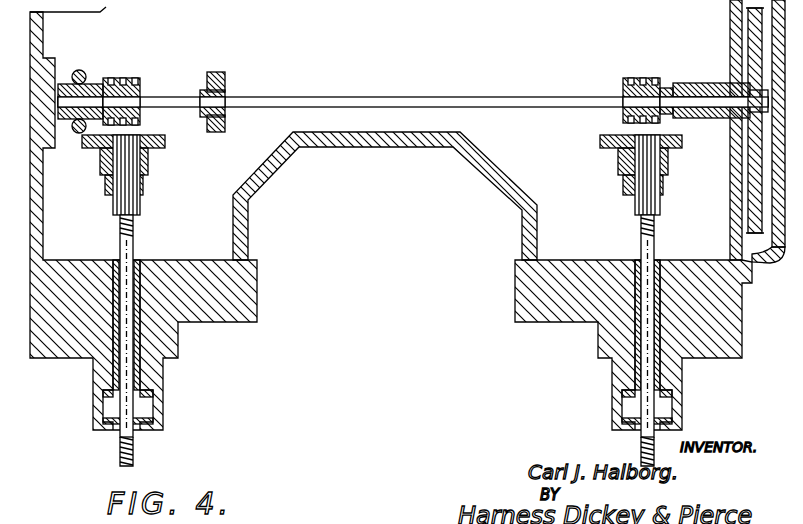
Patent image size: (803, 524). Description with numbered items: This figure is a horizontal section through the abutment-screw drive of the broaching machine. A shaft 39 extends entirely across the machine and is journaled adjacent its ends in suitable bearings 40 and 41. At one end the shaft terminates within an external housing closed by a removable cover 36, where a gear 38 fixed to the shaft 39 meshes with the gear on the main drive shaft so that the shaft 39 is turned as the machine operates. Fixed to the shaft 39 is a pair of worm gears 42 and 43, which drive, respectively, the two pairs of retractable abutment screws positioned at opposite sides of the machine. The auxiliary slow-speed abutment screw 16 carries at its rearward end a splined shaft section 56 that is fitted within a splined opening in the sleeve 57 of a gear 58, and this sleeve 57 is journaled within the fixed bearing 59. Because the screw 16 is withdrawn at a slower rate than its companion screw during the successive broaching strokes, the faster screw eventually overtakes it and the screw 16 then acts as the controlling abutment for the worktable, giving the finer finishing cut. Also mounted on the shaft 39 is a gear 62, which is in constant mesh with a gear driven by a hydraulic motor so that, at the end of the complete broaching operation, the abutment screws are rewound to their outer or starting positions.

The abutment screw 16 is at (118, 452).
The removable cover 36 is at (757, 263).
The gear 38 is at (744, 194).
The shaft 39 is at (366, 97).
The bearing 40 is at (95, 83).
The bearing 41 is at (712, 64).
The worm gear 42 is at (137, 80).
The worm gear 43 is at (637, 82).
The splined shaft section 56 is at (656, 208).
The sleeve 57 is at (618, 170).
The gear 58 is at (616, 135).
The fixed bearing 59 is at (664, 172).
The gear 62 is at (226, 82).